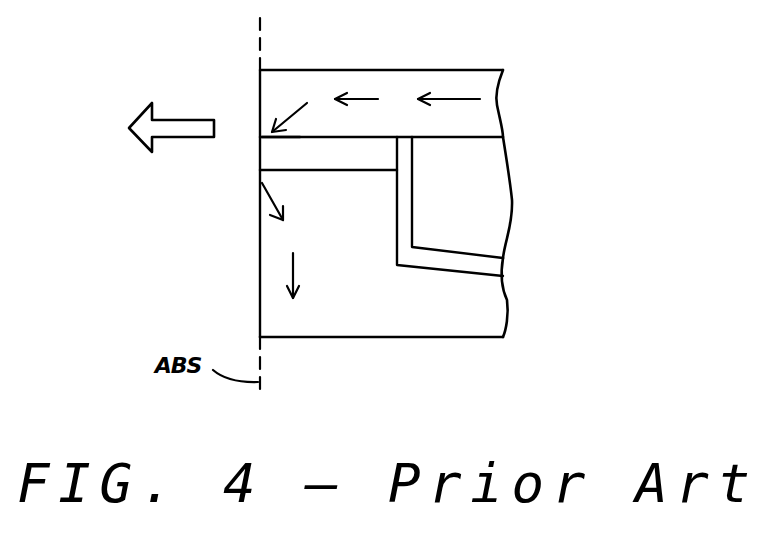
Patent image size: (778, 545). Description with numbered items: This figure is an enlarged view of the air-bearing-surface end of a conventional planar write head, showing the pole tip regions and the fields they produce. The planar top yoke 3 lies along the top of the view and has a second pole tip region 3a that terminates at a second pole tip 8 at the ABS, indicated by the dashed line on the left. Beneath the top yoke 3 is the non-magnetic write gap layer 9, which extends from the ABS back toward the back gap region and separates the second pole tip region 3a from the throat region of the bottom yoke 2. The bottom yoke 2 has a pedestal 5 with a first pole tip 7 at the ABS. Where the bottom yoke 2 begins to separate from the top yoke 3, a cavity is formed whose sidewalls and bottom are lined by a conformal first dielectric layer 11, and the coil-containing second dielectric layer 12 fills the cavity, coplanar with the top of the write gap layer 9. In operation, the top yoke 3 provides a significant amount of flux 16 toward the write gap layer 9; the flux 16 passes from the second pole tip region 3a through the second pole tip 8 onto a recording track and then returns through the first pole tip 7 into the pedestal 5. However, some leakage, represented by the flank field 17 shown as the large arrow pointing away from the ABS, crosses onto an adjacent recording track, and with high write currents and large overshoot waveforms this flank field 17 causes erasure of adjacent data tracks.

The bottom yoke 2 is at (480, 305).
The top yoke 3 is at (487, 107).
The second pole tip region 3a is at (297, 85).
The pedestal 5 is at (334, 245).
The first pole tip 7 is at (258, 228).
The second pole tip 8 is at (258, 90).
The write gap layer 9 is at (273, 152).
The first dielectric layer 11 is at (495, 266).
The second dielectric layer 12 is at (488, 198).
The flux 16 is at (457, 95).
The flank field 17 is at (148, 108).